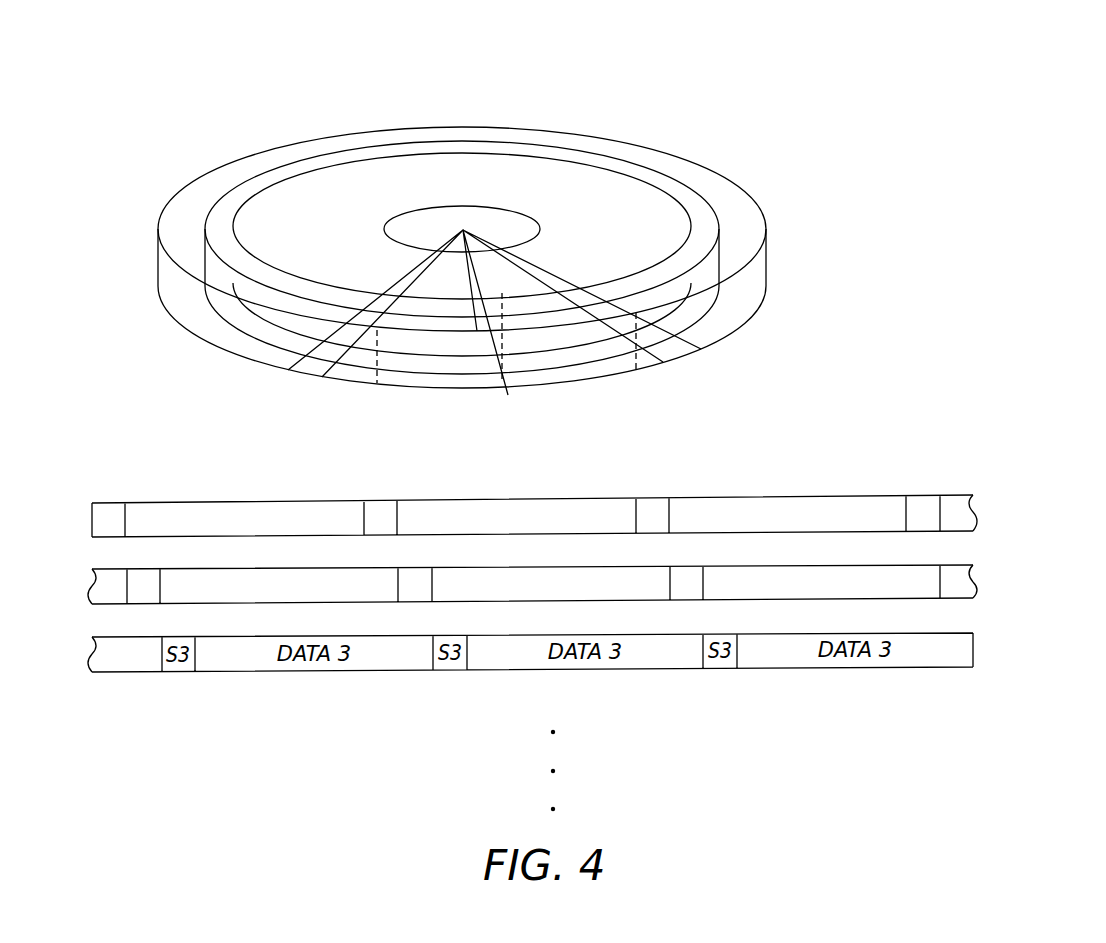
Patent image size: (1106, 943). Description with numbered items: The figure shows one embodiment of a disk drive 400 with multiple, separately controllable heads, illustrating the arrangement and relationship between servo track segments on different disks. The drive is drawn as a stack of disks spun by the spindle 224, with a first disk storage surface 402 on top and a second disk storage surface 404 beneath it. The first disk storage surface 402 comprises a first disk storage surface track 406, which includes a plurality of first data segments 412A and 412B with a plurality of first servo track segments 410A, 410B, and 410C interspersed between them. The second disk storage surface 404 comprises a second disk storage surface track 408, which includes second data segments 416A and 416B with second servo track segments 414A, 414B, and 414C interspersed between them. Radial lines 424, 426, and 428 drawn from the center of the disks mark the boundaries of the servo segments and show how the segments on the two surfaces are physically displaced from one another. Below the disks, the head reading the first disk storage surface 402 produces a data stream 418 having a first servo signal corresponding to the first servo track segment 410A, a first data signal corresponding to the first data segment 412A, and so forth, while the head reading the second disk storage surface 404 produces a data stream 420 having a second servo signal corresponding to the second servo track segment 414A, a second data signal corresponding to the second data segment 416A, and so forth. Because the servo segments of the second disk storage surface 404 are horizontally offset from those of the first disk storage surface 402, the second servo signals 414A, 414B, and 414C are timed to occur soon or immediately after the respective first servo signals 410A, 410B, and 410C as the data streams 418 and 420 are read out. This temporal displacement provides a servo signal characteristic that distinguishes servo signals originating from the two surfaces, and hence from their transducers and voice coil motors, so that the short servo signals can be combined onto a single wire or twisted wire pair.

The disk drive 400 is at (472, 90).
The first disk storage surface 402 is at (680, 153).
The second disk storage surface 404 is at (765, 283).
The first disk storage surface track 406 is at (742, 193).
The second disk storage surface track 408 is at (720, 292).
The spindle 224 is at (492, 207).
The first sector boundary 424 is at (411, 271).
The second sector boundary 426 is at (505, 234).
The third sector boundary 428 is at (527, 258).
The first servo track segment 410A is at (387, 303).
The first data segment 412A is at (398, 313).
The second servo track segment 414A is at (143, 569).
The second data segment 416A is at (242, 569).
The first servo track segment 410B is at (372, 500).
The second servo track segment 414B is at (415, 567).
The first data segment 412B is at (533, 307).
The second data segment 416B is at (575, 566).
The first servo track segment 410C is at (663, 497).
The second servo track segment 414C is at (688, 566).
The data stream 418 is at (1005, 488).
The data stream 420 is at (1005, 557).